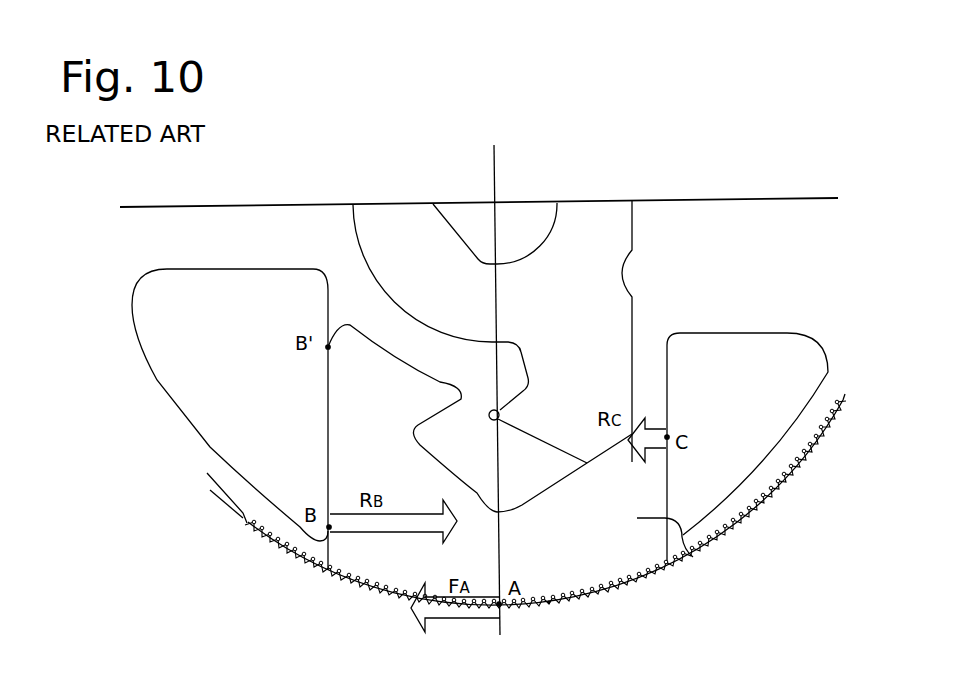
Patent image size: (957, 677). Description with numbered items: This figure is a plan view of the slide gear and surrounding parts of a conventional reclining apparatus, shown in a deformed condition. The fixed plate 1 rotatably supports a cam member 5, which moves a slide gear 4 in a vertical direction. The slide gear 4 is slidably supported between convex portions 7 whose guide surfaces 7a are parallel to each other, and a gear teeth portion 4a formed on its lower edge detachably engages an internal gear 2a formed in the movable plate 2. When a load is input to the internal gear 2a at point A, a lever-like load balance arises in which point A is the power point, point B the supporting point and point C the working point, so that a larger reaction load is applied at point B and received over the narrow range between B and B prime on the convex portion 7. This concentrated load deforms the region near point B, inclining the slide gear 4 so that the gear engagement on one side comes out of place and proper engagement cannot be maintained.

The fixed plate 1 is at (754, 256).
The movable plate 2 is at (208, 574).
The internal gear 2a is at (737, 515).
The slide gear 4 is at (693, 557).
The gear teeth portion 4a is at (549, 602).
The cam member 5 is at (590, 218).
The convex portions 7 is at (183, 278).
The guide surfaces 7a is at (327, 287).